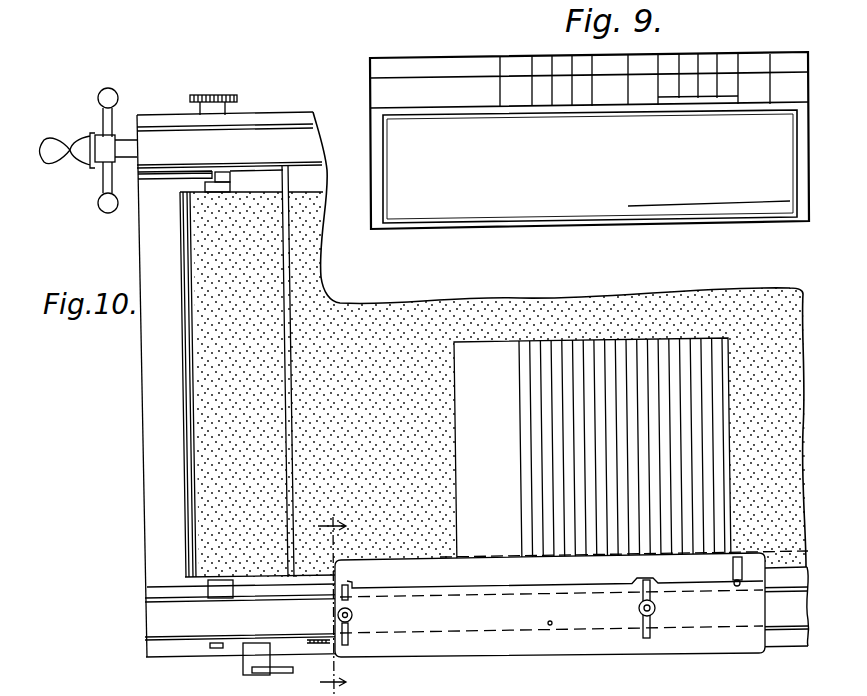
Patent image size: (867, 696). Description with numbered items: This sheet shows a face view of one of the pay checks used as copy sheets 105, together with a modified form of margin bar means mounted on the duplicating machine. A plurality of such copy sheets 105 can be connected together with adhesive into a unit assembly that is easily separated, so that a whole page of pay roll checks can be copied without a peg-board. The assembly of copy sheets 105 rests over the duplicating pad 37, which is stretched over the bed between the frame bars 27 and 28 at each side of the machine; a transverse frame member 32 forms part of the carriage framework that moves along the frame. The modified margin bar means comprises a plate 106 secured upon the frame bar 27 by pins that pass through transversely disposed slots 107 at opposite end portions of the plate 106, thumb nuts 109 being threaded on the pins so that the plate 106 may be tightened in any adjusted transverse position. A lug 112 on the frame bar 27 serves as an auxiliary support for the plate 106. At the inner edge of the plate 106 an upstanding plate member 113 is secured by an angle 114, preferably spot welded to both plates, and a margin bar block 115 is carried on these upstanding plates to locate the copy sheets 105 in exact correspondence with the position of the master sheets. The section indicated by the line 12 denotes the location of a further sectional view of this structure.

In FIG. 9, the copy sheets 105 is at (397, 55).
In FIG. 10, the copy sheets 105 is at (620, 343).
In FIG. 10, the frame bar 27 is at (272, 120).
In FIG. 10, the duplicating pad 37 is at (377, 313).
In FIG. 10, the section line 12 is at (324, 599).
In FIG. 10, the upstanding plate member 113 is at (397, 573).
In FIG. 10, the angle 114 is at (445, 583).
In FIG. 10, the lug 112 is at (552, 622).
In FIG. 10, the plate 106 is at (522, 647).
In FIG. 10, the slots 107 is at (341, 588).
In FIG. 10, the thumb nuts 109 is at (337, 615).
In FIG. 10, the margin bar block 115 is at (742, 560).
In FIG. 10, the transverse frame member 32 is at (178, 688).
In FIG. 10, the frame bar 28 is at (280, 675).